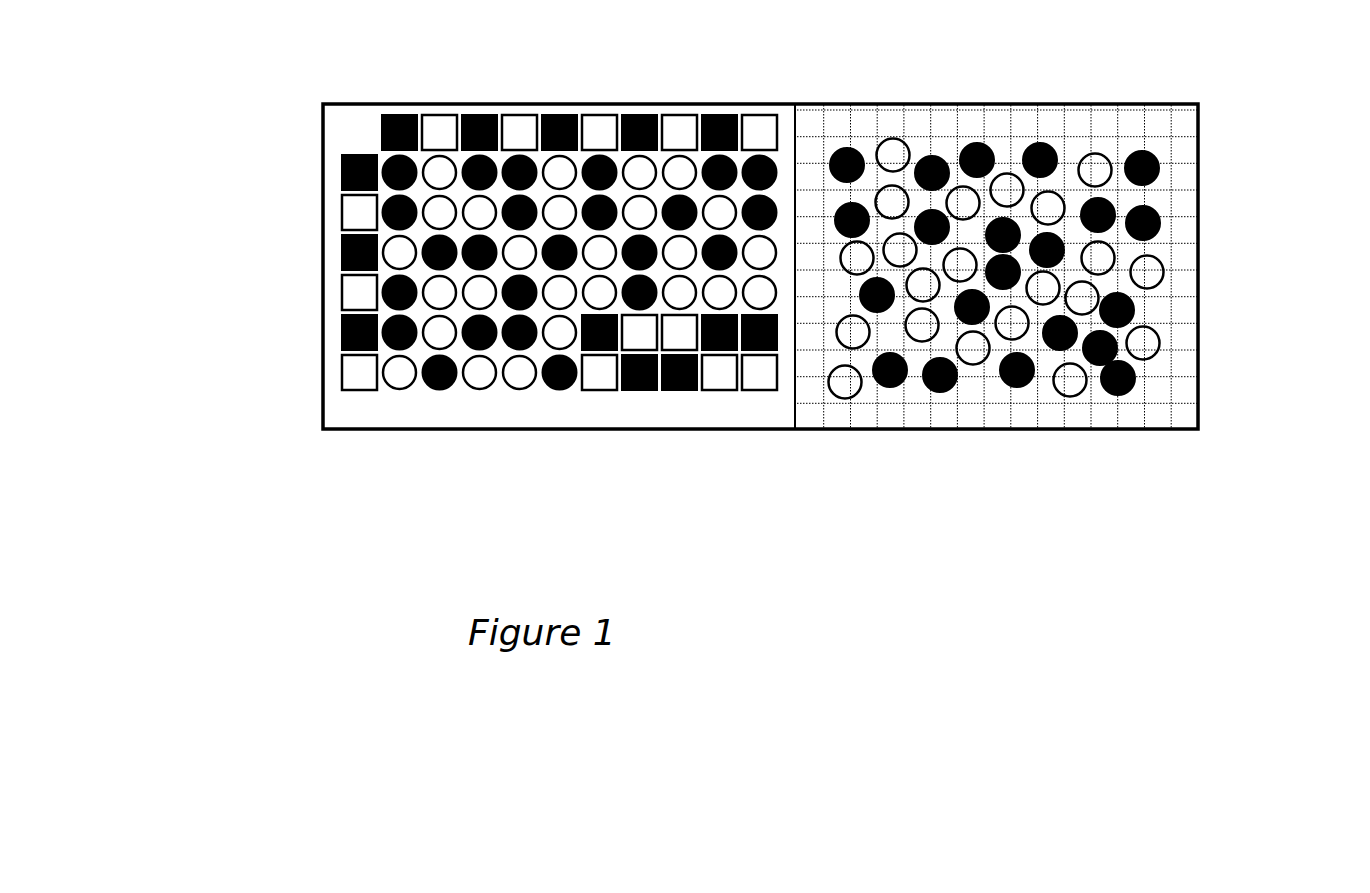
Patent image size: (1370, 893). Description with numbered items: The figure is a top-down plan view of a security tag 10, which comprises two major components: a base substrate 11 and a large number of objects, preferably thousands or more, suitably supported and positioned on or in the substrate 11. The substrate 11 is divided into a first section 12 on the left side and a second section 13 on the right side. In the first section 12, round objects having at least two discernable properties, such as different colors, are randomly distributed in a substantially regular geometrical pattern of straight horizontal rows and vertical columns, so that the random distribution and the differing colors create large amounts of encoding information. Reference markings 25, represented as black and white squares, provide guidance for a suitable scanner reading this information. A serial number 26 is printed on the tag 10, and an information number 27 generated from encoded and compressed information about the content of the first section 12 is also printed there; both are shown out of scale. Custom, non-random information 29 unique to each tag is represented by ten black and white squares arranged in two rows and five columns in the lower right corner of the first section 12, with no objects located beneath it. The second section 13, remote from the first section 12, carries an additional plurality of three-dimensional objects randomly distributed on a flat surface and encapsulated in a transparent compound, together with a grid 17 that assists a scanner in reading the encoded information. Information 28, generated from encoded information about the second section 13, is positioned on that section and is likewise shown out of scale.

The security tag 10 is at (1313, 60).
The base substrate 11 is at (370, 412).
The first section 12 is at (796, 78).
The second section 13 is at (1200, 80).
The grid 17 is at (1173, 405).
The reference markings 25 is at (378, 130).
The serial number 26 is at (463, 410).
The information number 27 is at (670, 475).
The information 28 is at (1008, 493).
The information 29 is at (675, 362).